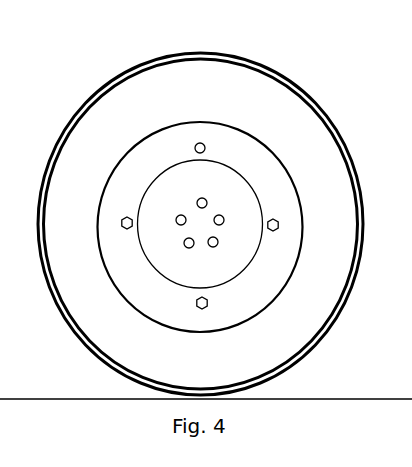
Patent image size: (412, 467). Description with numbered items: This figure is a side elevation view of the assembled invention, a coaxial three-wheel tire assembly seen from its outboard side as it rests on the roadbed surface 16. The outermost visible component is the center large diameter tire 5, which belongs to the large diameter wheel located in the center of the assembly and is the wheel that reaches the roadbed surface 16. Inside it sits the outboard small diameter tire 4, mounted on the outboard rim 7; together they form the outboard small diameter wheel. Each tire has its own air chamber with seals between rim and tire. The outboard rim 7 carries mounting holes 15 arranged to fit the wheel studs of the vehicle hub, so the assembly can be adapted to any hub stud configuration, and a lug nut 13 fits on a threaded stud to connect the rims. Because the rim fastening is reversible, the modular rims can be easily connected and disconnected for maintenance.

The outboard small diameter tire 4 is at (288, 103).
The center large diameter tire 5 is at (283, 75).
The outboard rim 7 is at (157, 148).
The lug nut 13 is at (200, 146).
The mounting holes 15 is at (221, 217).
The roadbed surface 16 is at (50, 399).